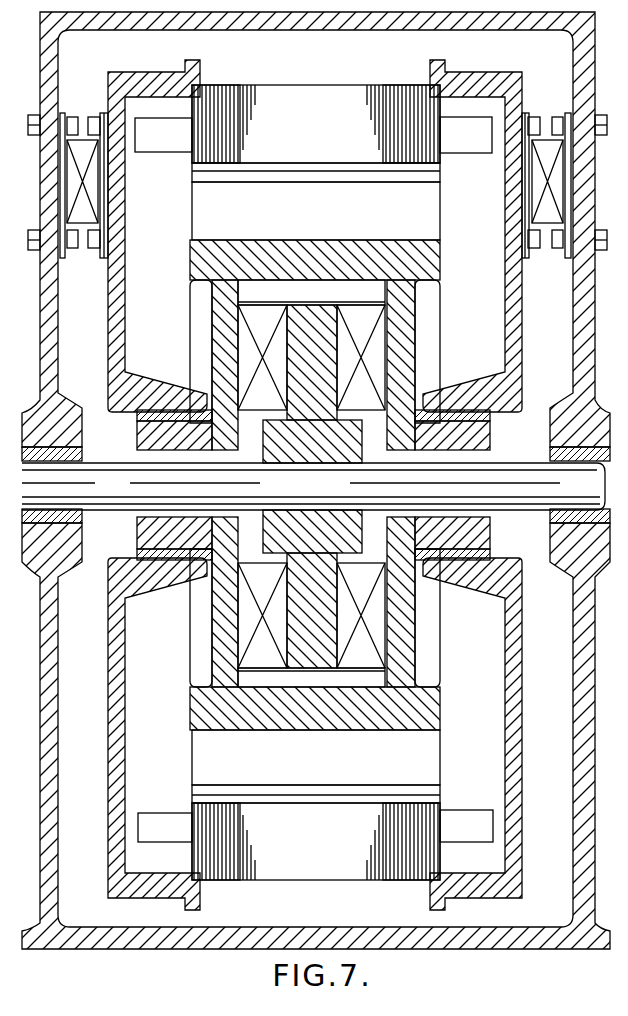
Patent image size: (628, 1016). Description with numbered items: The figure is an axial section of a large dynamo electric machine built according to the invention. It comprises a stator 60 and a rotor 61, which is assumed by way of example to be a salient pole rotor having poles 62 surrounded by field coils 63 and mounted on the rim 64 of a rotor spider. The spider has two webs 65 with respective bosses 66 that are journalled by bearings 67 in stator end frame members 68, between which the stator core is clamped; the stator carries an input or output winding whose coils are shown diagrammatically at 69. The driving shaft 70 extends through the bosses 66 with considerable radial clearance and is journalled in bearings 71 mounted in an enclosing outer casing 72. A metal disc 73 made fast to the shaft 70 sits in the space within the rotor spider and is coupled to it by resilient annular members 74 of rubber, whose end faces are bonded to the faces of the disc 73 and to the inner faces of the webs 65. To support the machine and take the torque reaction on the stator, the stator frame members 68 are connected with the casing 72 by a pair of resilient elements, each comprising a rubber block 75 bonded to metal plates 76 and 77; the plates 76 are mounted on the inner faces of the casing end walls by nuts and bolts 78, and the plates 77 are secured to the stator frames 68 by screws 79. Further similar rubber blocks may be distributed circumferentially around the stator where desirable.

The stator 60 is at (325, 862).
The rotor 61 is at (458, 345).
The pole 62 is at (353, 172).
The field coil 63 is at (295, 190).
The rim 64 is at (190, 257).
The web 65 is at (217, 328).
The boss 66 is at (143, 425).
The bearing 67 is at (137, 553).
The stator end frame member 68 is at (160, 80).
The coil 69 is at (462, 143).
The driving shaft 70 is at (533, 473).
The bearing 71 is at (87, 452).
The outer casing 72 is at (50, 694).
The metal disc 73 is at (305, 620).
The annular member 74 is at (257, 313).
The rubber block 75 is at (97, 190).
The metal plate 76 is at (62, 112).
The metal plate 77 is at (104, 112).
The nuts and bolts 78 is at (32, 115).
The screw 79 is at (93, 117).